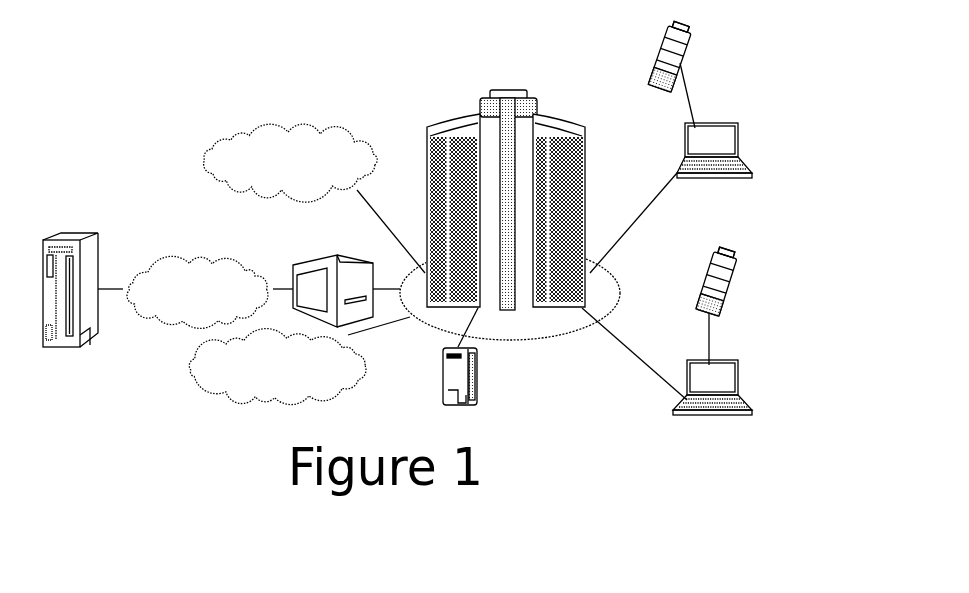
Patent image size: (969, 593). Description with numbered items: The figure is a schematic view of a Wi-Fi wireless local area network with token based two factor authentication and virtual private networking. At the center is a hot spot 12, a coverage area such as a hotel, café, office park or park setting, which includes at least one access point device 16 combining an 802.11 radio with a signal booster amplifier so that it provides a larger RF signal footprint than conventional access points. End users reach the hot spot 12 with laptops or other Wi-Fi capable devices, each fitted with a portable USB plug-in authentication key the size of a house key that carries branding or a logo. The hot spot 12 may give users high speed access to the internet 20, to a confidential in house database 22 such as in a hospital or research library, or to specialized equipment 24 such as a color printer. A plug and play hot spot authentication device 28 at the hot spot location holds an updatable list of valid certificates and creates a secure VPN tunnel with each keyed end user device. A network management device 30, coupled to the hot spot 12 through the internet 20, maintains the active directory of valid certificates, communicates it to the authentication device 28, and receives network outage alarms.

The hot spot 12 is at (586, 162).
The access point device 16 is at (478, 382).
The internet 20 is at (180, 258).
The in house database 22 is at (206, 134).
The specialized equipment 24 is at (186, 382).
The hot spot authentication device 28 is at (321, 262).
The network management device 30 is at (72, 236).